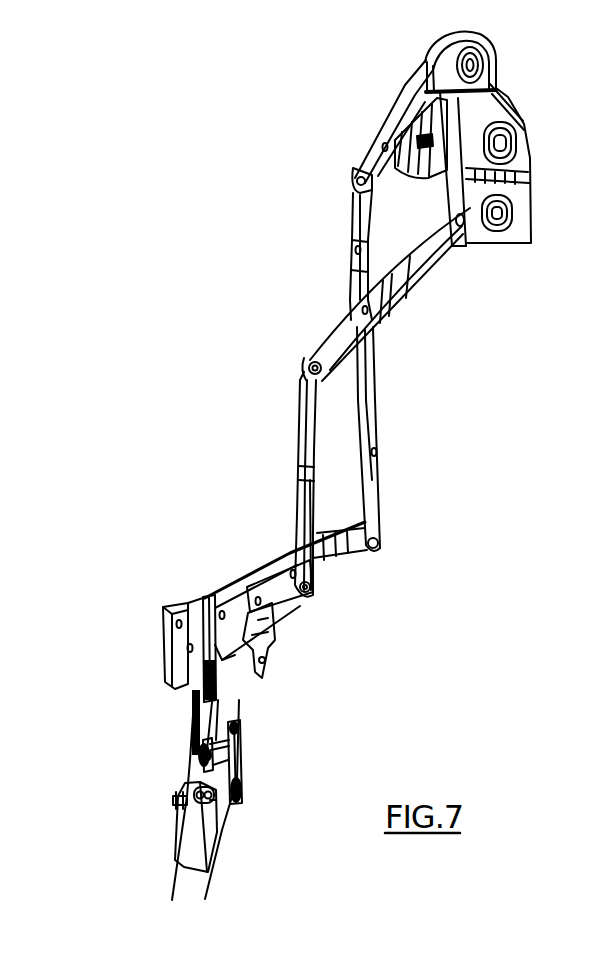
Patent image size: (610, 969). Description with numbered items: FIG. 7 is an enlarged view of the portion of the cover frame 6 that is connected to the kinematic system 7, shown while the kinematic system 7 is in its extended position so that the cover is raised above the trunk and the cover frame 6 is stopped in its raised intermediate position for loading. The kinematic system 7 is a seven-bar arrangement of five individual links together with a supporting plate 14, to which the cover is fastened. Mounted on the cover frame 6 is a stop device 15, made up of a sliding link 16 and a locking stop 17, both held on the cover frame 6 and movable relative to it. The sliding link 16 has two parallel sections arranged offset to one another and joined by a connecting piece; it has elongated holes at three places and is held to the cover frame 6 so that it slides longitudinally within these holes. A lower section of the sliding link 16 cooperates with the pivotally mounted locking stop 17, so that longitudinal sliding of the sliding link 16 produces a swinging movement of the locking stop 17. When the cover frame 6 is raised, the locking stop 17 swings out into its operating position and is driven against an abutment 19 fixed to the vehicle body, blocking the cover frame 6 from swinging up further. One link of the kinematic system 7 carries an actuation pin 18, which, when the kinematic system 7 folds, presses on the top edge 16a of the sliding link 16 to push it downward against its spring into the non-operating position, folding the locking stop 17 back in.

The kinematic system 7 is at (393, 392).
The supporting plate 14 is at (510, 241).
The actuation pin 18 is at (297, 400).
The sliding link 16 is at (204, 604).
The top edge 16a is at (207, 603).
The abutment 19 is at (172, 680).
The stop device 15 is at (170, 765).
The locking stop 17 is at (238, 784).
The cover frame 6 is at (198, 888).